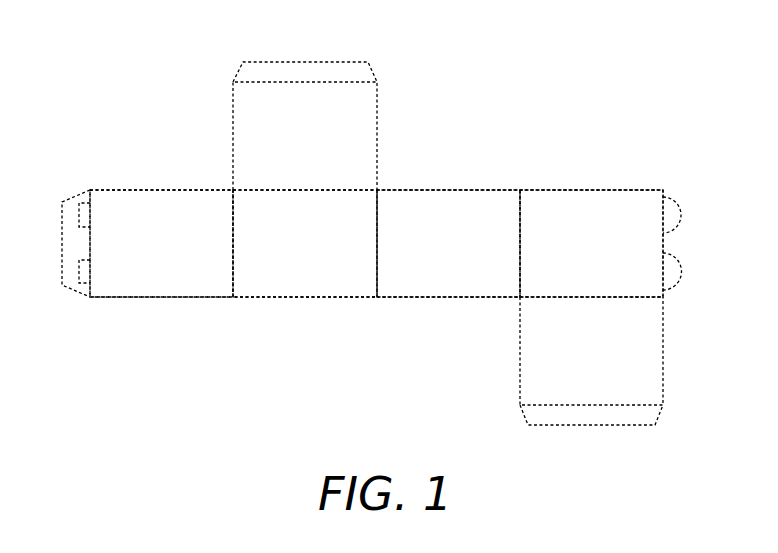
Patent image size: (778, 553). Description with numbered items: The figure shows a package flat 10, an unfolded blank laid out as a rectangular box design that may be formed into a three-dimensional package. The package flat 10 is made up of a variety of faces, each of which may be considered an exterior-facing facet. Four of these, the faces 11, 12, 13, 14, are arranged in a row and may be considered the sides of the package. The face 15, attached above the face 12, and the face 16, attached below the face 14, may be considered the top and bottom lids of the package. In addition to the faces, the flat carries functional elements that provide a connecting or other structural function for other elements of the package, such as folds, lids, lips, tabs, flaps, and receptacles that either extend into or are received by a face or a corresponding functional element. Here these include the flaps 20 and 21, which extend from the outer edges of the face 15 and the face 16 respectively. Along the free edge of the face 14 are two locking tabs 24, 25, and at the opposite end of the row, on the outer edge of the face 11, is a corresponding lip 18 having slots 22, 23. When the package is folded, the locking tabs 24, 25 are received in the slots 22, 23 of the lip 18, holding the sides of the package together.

The package flat 10 is at (542, 72).
The face 11 is at (152, 255).
The face 12 is at (296, 255).
The face 13 is at (439, 255).
The face 14 is at (582, 255).
The face 15 is at (296, 148).
The face 16 is at (581, 365).
The lip 18 is at (68, 288).
The flap 20 is at (273, 62).
The flap 21 is at (592, 426).
The slot 22 is at (78, 268).
The slot 23 is at (78, 217).
The locking tab 24 is at (684, 215).
The locking tab 25 is at (684, 271).